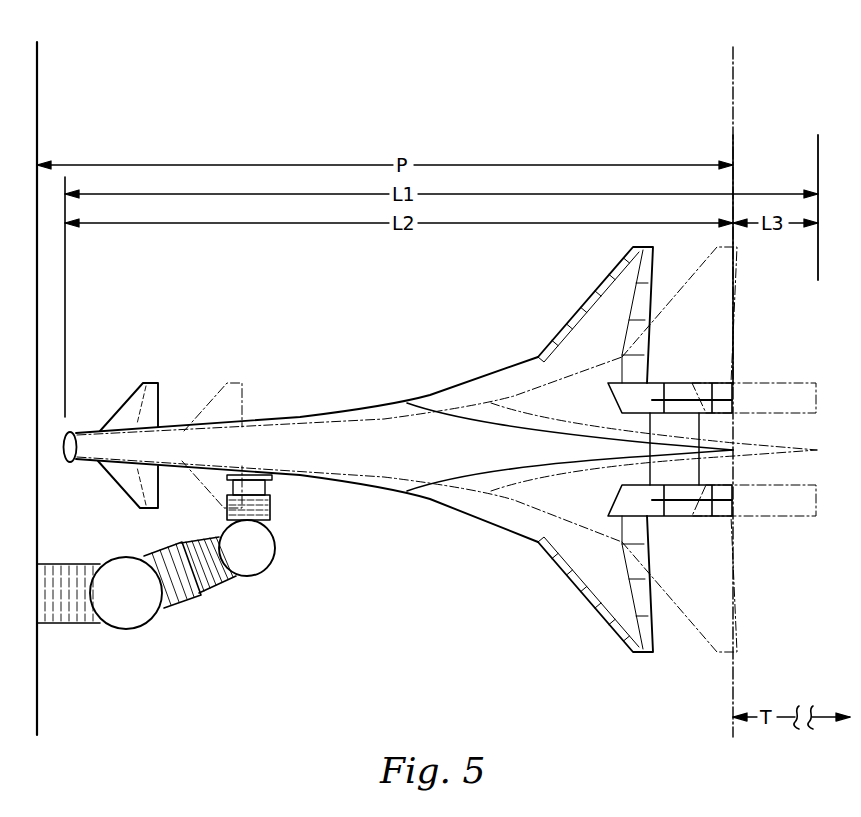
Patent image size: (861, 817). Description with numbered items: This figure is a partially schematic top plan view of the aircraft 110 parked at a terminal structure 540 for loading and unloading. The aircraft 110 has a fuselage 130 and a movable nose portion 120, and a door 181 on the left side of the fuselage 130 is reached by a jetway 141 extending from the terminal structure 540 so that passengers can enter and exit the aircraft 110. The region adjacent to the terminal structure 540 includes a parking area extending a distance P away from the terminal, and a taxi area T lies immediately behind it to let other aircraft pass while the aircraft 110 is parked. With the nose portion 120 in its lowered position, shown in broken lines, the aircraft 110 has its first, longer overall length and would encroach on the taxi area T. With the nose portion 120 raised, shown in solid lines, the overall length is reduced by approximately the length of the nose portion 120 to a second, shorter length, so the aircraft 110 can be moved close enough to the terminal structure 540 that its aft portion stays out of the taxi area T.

The terminal structure 540 is at (38, 128).
The aircraft 110 is at (303, 371).
The nose portion 120 is at (73, 430).
The aircraft fuselage 130 is at (288, 478).
The door 181 is at (250, 482).
The jetway 141 is at (190, 600).